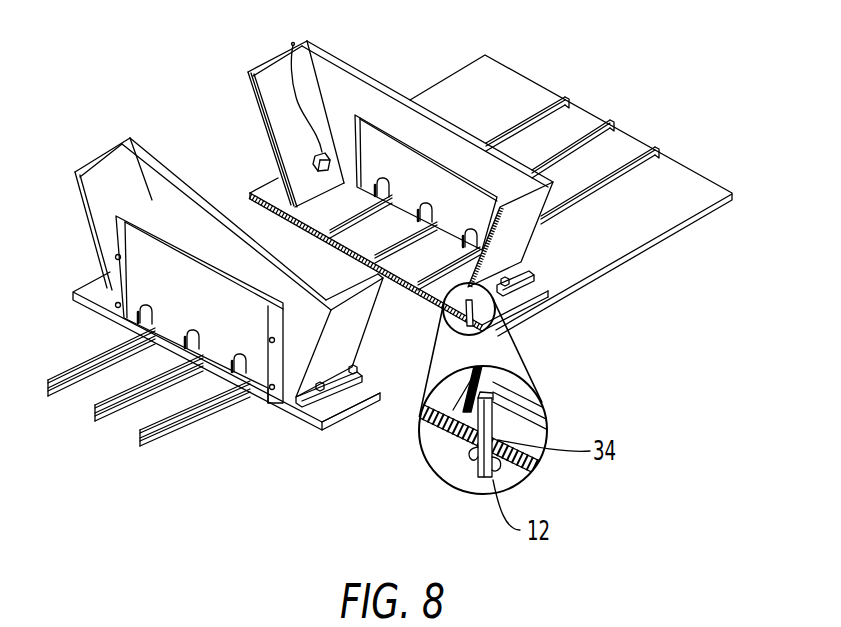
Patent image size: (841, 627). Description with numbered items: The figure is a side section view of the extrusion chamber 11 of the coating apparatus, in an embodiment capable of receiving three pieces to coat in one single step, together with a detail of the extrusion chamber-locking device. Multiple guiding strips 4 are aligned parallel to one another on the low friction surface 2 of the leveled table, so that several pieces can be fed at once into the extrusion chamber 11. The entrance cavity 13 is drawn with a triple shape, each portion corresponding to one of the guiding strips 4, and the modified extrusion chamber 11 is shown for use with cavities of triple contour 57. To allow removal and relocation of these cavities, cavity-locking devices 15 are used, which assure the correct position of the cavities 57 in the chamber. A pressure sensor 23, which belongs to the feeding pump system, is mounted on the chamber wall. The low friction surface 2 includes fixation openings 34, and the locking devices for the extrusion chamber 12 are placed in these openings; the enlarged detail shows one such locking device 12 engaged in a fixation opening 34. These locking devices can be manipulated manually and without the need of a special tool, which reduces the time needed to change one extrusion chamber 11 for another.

The low friction surface 2 is at (707, 193).
The guiding strips 4 is at (565, 97).
The extrusion chamber 11 is at (518, 237).
The locking devices for the extrusion chamber 12 is at (493, 480).
The entrance cavity 13 is at (430, 196).
The locking devices for the cavity 15 is at (280, 390).
The pressure sensor 23 is at (318, 164).
The fixation openings 34 is at (498, 440).
The cavities of triple contour 57 is at (204, 313).